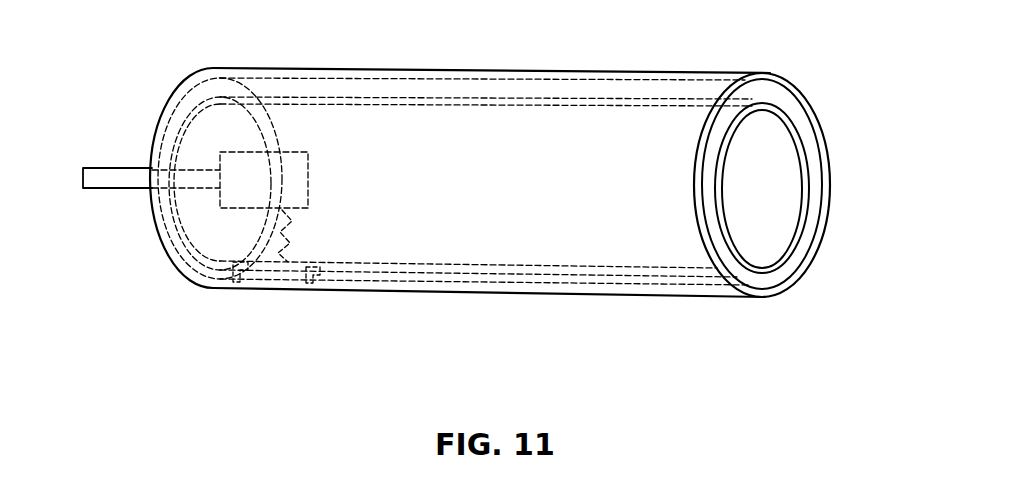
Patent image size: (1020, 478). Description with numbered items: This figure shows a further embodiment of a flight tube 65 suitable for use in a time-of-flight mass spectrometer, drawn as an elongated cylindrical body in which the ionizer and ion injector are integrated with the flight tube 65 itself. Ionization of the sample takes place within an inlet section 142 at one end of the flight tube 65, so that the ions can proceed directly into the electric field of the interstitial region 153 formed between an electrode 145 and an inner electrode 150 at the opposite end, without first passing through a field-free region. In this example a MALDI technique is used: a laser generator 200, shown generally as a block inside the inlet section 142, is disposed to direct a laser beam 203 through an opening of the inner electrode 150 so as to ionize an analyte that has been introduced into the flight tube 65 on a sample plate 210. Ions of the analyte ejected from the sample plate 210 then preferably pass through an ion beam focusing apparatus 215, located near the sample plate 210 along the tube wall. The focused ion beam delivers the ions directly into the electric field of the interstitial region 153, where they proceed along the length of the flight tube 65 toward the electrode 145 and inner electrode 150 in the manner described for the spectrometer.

The inlet section 142 is at (331, 66).
The electrode 145 is at (766, 78).
The interstitial region 153 is at (768, 94).
The inner electrode 150 is at (787, 117).
The laser generator 200 is at (314, 172).
The laser beam 203 is at (284, 249).
The sample plate 210 is at (238, 277).
The ion beam focusing apparatus 215 is at (320, 278).
The flight tube 65 is at (583, 308).